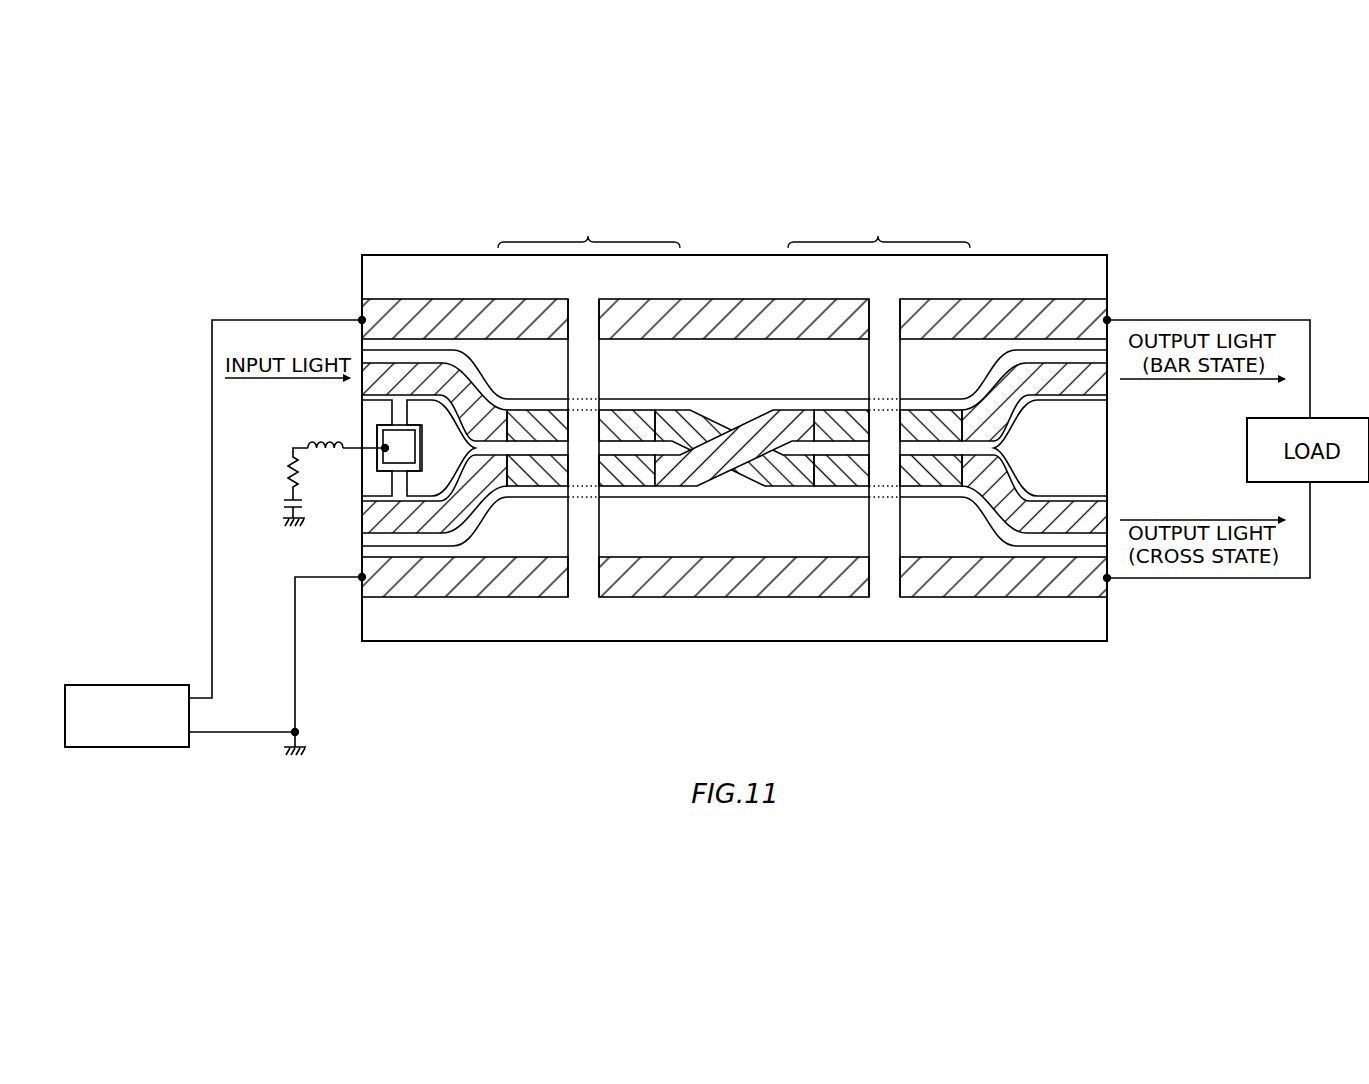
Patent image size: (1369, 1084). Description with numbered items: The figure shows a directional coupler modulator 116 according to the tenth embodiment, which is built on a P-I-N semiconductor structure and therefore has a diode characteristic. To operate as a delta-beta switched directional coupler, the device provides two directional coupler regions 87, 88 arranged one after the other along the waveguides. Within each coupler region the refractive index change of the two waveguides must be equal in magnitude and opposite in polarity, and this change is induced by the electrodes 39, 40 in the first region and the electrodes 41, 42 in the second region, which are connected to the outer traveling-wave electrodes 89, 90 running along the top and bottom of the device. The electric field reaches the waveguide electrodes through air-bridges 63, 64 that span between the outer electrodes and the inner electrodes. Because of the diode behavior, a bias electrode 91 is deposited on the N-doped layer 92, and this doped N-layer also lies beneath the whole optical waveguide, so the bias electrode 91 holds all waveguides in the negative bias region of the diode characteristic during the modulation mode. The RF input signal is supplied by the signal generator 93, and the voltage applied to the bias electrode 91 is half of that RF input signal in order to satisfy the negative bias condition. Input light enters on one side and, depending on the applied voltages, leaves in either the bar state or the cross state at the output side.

The directional coupler modulator 116 is at (206, 258).
The first directional coupler region 87 is at (589, 353).
The second directional coupler region 88 is at (879, 353).
The outer traveling-wave electrode 89 is at (432, 298).
The outer traveling-wave electrode 90 is at (432, 597).
The electrode 39 is at (538, 408).
The electrode 40 is at (527, 487).
The electrode 41 is at (823, 410).
The electrode 42 is at (821, 497).
The air-bridge 63 is at (600, 374).
The air-bridge 64 is at (567, 530).
The bias electrode 91 is at (389, 459).
The N-doped layer 92 is at (472, 357).
The signal generator 93 is at (115, 727).